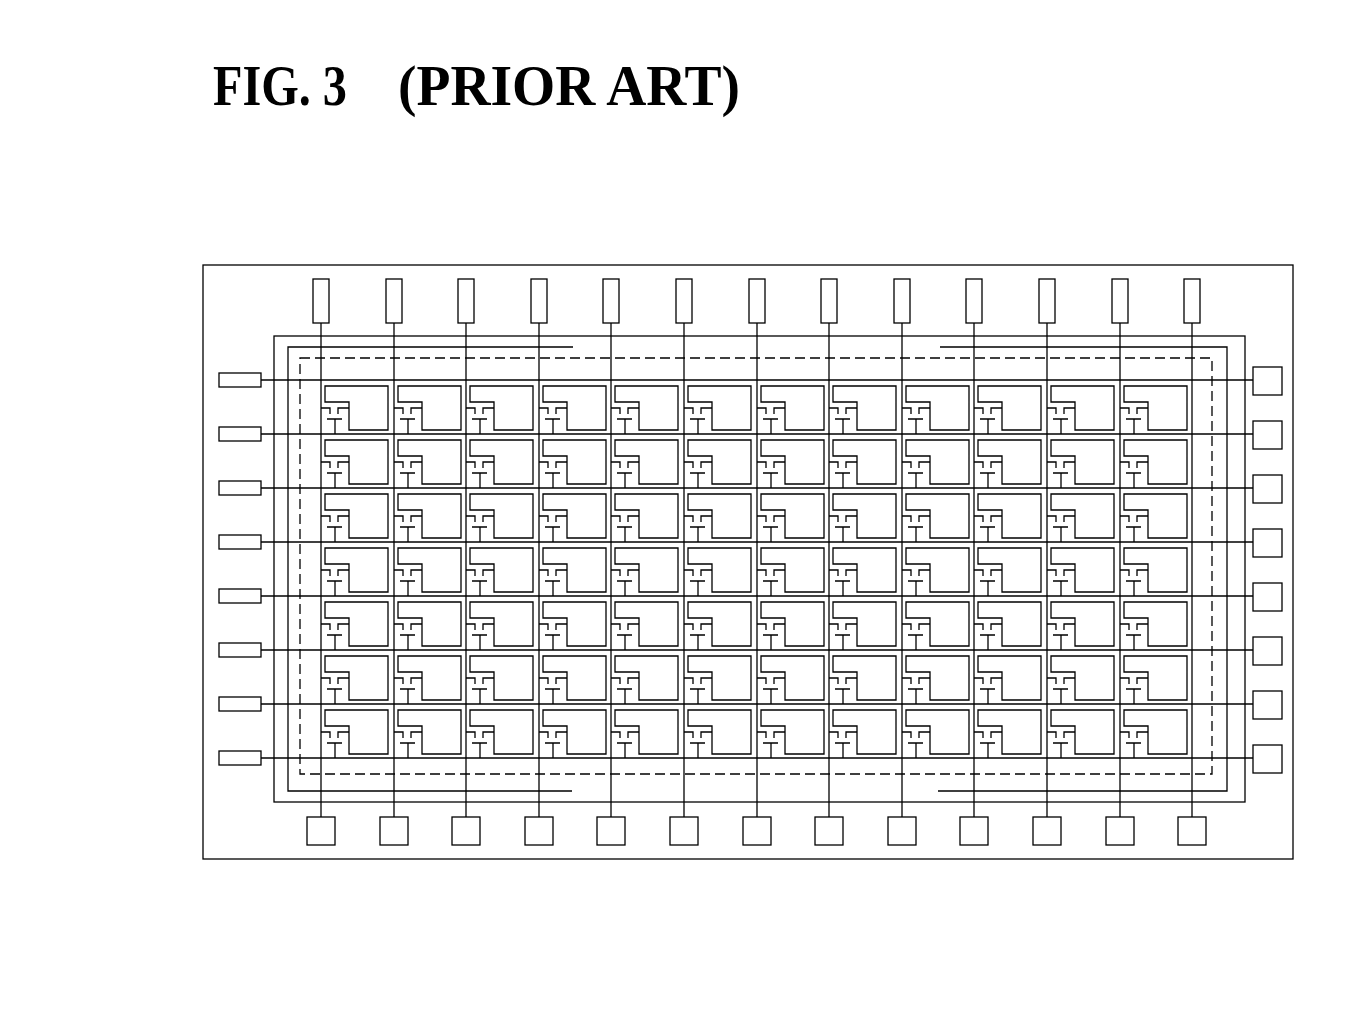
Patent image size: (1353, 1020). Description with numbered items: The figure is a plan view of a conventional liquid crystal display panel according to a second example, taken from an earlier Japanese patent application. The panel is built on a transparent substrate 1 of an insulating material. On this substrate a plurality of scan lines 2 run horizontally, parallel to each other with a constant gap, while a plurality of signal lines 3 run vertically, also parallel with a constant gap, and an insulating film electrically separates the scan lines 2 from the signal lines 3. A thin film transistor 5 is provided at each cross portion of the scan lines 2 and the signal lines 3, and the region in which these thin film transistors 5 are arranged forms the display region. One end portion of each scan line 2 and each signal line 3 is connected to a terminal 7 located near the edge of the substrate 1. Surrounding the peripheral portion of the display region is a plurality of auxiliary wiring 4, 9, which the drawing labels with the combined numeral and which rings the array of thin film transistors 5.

The transparent substrate 1 is at (956, 265).
The scan lines 2 is at (754, 562).
The signal lines 3 is at (1197, 331).
The inner frame line 4 is at (292, 342).
The dashed boundary line 9 is at (304, 356).
The thin film transistor 5 is at (325, 415).
The terminal 7 is at (1195, 280).